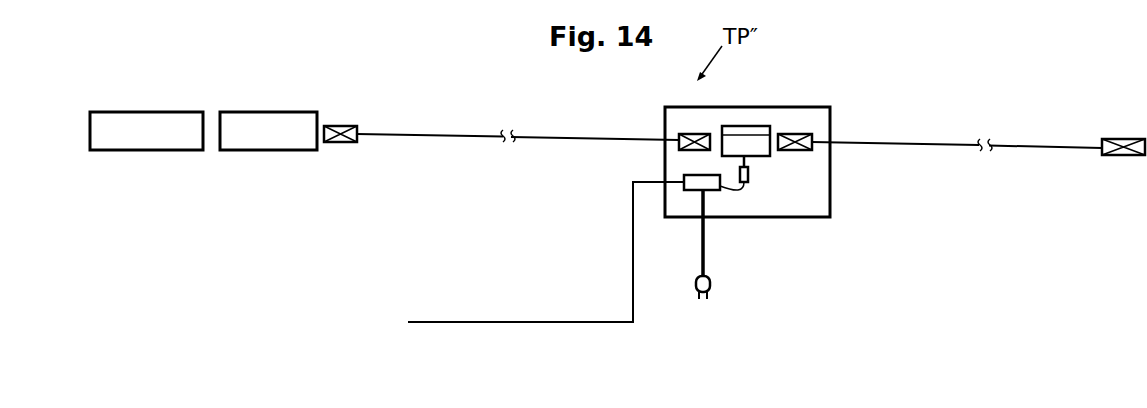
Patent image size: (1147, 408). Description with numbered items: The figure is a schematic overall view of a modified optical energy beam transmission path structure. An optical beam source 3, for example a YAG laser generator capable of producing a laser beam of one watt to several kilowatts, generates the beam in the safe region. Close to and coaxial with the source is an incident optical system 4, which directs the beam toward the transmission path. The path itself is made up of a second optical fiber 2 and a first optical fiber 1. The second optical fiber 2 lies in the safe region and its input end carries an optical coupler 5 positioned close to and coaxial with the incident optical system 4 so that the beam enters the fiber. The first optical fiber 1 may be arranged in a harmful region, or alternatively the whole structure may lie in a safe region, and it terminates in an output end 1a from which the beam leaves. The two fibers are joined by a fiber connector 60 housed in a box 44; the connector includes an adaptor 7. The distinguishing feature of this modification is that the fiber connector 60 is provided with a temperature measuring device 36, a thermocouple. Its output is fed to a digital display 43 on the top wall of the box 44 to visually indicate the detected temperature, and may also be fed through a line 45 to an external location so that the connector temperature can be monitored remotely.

The first optical fiber 1 is at (910, 143).
The output end 1a is at (1128, 156).
The second optical fiber 2 is at (578, 134).
The optical beam source 3 is at (185, 112).
The incident optical system 4 is at (272, 112).
The optical coupler 5 is at (343, 126).
The adaptor 7 is at (755, 145).
The temperature measuring device 36 is at (742, 191).
The digital display 43 is at (693, 185).
The box 44 is at (832, 175).
The line 45 is at (553, 322).
The fiber connector 60 is at (752, 127).